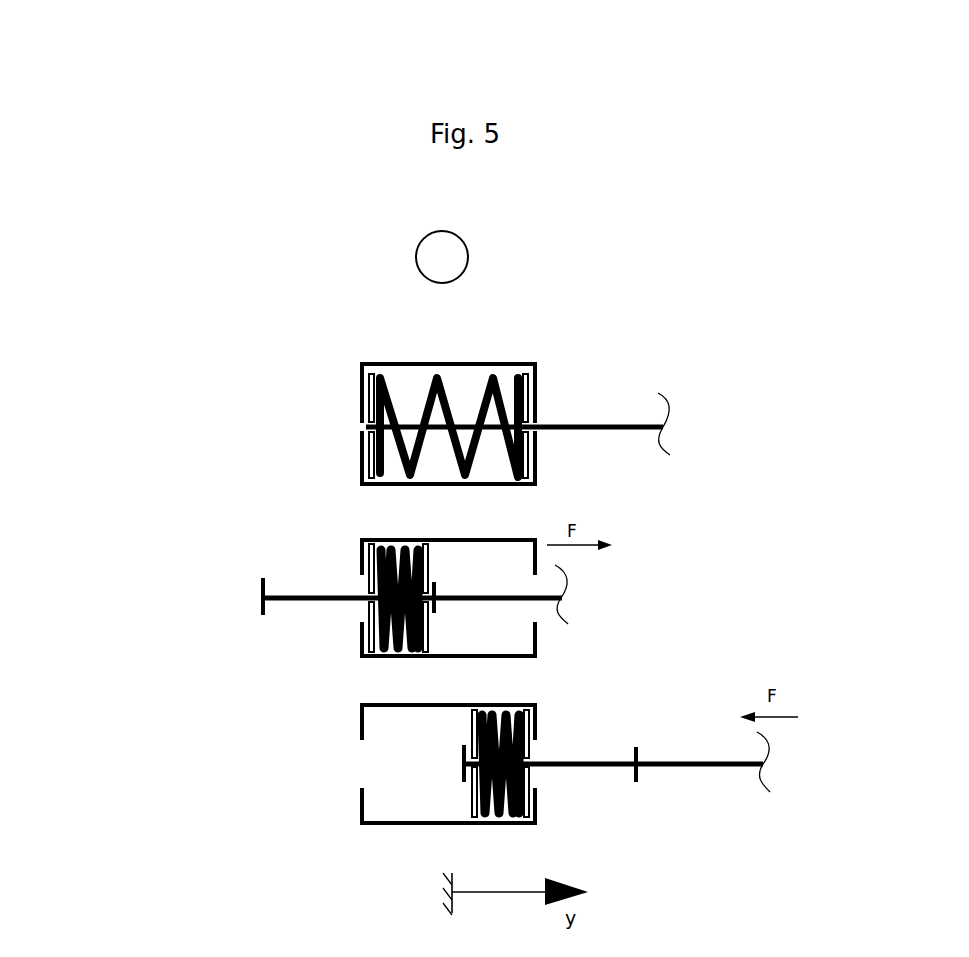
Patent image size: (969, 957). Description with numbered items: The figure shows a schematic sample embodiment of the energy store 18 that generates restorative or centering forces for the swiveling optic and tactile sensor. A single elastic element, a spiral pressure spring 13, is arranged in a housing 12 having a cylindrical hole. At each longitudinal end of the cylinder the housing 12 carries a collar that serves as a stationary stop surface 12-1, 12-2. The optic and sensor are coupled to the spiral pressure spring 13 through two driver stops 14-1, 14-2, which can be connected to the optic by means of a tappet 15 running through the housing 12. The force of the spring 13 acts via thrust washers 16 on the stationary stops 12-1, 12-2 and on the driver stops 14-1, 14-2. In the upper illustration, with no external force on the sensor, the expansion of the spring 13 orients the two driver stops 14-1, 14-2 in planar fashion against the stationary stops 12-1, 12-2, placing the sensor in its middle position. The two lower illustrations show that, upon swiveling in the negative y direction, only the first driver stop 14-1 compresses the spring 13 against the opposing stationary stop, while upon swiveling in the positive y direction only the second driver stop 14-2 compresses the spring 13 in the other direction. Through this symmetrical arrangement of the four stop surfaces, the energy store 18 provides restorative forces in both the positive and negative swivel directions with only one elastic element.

The spring housing with stops 12 is at (387, 363).
The stationary stop surface 12-1 is at (362, 390).
The stationary stop surface 12-2 is at (537, 373).
The spiral pressure spring 13 is at (500, 390).
The first driver stop 14-1 is at (537, 410).
The second driver stop 14-2 is at (366, 413).
The tappet for coupling of force 15 is at (618, 428).
The thrust washers 16 is at (372, 445).
The energy store 18 is at (450, 356).